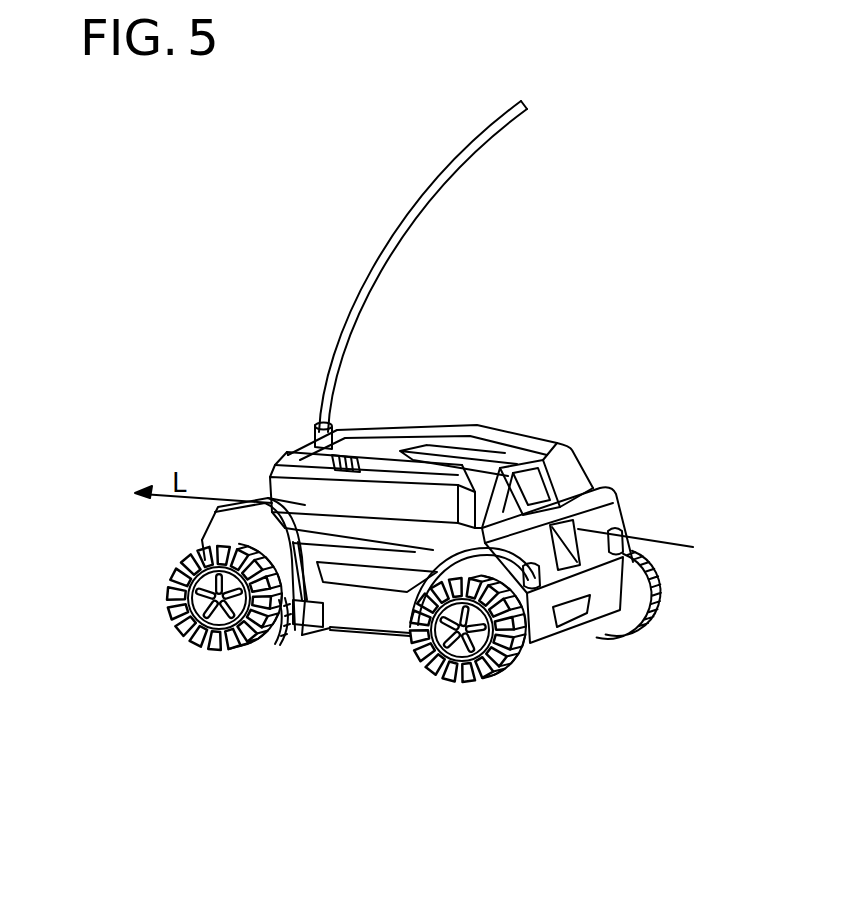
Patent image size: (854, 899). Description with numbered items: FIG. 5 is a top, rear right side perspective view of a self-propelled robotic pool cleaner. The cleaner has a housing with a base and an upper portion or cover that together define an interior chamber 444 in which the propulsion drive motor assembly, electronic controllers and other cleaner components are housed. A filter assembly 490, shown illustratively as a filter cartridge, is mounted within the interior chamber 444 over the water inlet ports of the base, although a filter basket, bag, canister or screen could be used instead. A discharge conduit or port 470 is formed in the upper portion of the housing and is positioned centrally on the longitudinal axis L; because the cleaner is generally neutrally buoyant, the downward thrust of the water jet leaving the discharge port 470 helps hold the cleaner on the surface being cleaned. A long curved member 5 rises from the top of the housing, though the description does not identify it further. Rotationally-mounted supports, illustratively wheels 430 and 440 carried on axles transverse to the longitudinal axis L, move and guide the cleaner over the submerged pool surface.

The antenna 5 is at (365, 285).
The filter assembly 490 is at (294, 473).
The interior chamber 444 is at (480, 503).
The discharge conduit or port 470 is at (585, 522).
The wheel 430 is at (215, 659).
The wheel 440 is at (476, 685).